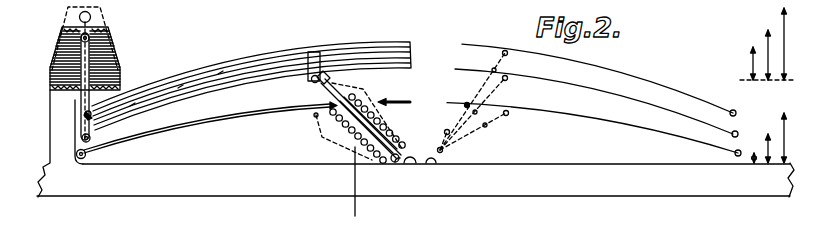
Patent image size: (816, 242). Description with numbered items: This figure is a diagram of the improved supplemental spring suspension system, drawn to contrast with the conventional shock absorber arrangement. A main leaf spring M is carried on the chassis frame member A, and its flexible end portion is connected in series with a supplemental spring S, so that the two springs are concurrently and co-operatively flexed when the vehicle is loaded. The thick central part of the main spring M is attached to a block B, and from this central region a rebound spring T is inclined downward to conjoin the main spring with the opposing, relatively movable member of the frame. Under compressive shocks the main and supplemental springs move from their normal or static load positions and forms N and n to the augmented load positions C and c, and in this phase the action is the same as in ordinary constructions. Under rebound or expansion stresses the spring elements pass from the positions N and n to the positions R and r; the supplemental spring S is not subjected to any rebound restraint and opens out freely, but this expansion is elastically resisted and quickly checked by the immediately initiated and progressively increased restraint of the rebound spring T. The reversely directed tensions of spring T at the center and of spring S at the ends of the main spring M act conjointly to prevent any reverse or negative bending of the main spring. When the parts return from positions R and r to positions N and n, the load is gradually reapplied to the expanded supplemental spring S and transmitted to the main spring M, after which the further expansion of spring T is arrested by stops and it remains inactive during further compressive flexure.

The vehicle frame / axle bar A is at (415, 143).
The supplemental spring S is at (114, 53).
The rebound spring T is at (68, 8).
The main spring M is at (262, 78).
The spring link block B is at (363, 93).
The rebound position of spring element R is at (75, 116).
The normal load position of spring element N is at (80, 138).
The augmented load position of spring element C is at (88, 154).
The rebound position of supplemental spring r is at (790, 8).
The normal load position of supplemental spring n is at (62, 27).
The augmented load position of supplemental spring c is at (60, 45).